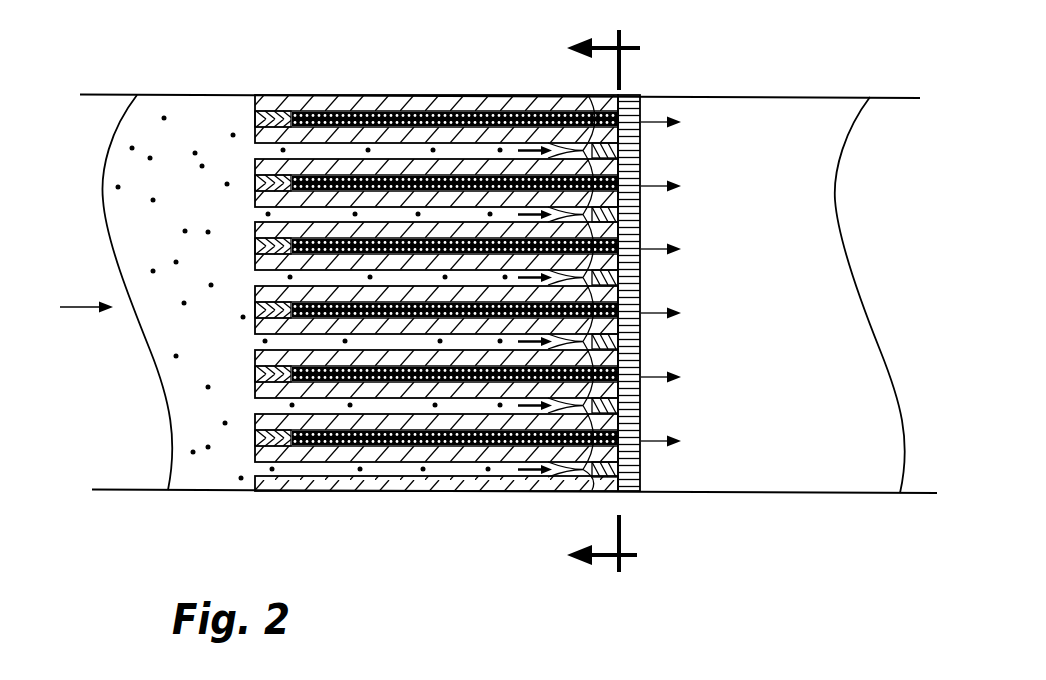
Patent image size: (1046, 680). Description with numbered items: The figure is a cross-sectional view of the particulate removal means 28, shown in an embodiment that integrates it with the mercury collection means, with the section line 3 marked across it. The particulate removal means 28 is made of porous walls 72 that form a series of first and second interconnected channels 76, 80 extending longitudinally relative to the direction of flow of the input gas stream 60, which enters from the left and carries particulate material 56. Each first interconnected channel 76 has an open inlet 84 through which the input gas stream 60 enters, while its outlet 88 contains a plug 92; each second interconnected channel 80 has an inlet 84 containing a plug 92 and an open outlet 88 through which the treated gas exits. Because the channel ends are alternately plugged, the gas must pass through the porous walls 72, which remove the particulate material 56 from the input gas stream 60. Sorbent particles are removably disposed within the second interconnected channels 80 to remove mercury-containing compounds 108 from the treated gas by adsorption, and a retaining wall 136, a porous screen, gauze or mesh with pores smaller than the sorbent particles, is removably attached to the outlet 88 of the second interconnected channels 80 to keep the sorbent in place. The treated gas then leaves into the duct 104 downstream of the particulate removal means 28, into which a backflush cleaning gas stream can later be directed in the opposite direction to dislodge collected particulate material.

The particulate removal means 28 is at (475, 295).
The section line 3- 3 is at (609, 312).
The plug 92 is at (270, 108).
The retaining wall 136 is at (641, 214).
The input gas stream 60 is at (84, 308).
The duct 104 is at (122, 492).
The mercury-containing compounds 108 is at (194, 454).
The particulate material 56 is at (208, 447).
The inlet 84 is at (262, 467).
The first interconnected channels 76 is at (388, 468).
The porous walls 72 is at (445, 482).
The second interconnected channels 80 is at (460, 440).
The outlet 88 is at (622, 497).